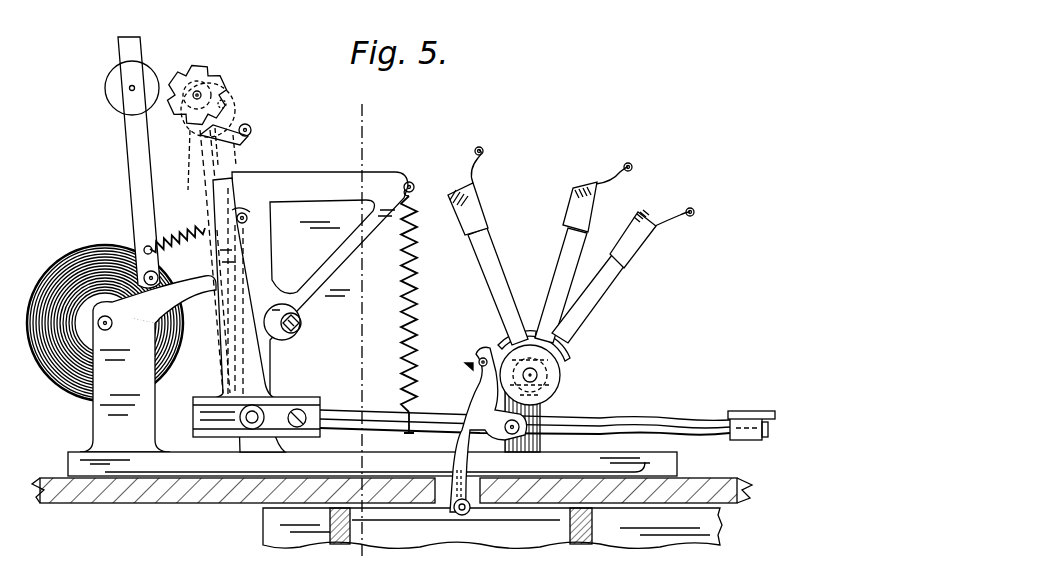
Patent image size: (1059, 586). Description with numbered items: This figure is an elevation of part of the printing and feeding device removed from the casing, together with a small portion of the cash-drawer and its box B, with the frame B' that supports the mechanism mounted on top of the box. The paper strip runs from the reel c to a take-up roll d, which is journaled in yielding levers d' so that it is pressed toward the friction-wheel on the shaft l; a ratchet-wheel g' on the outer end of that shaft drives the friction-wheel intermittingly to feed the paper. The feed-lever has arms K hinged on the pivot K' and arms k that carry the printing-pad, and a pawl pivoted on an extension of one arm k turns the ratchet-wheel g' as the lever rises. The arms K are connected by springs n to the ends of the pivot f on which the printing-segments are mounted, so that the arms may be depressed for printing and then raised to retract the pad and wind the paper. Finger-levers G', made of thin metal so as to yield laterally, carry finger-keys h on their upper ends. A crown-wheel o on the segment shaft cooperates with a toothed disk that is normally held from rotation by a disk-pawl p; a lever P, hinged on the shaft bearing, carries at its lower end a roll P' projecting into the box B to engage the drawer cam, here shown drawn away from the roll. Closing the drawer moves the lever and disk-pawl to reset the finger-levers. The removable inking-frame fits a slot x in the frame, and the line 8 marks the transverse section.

The yielding levers d' is at (139, 148).
The take-up roll d is at (117, 88).
The shaft l is at (193, 91).
The ratchet-wheel g' is at (207, 80).
The frame B' is at (387, 311).
The pivot f is at (410, 182).
The springs n is at (419, 291).
The arms k is at (232, 196).
The finger-keys h is at (594, 188).
The finger-levers G' is at (571, 246).
The pin x is at (300, 323).
The box B is at (125, 381).
The reel c is at (105, 310).
The pivot K' is at (246, 424).
The arms K is at (525, 412).
The lever P is at (481, 429).
The roll P' is at (459, 534).
The disk-pawl p is at (505, 350).
The crown-wheel o is at (560, 378).
The section line 8 is at (358, 333).